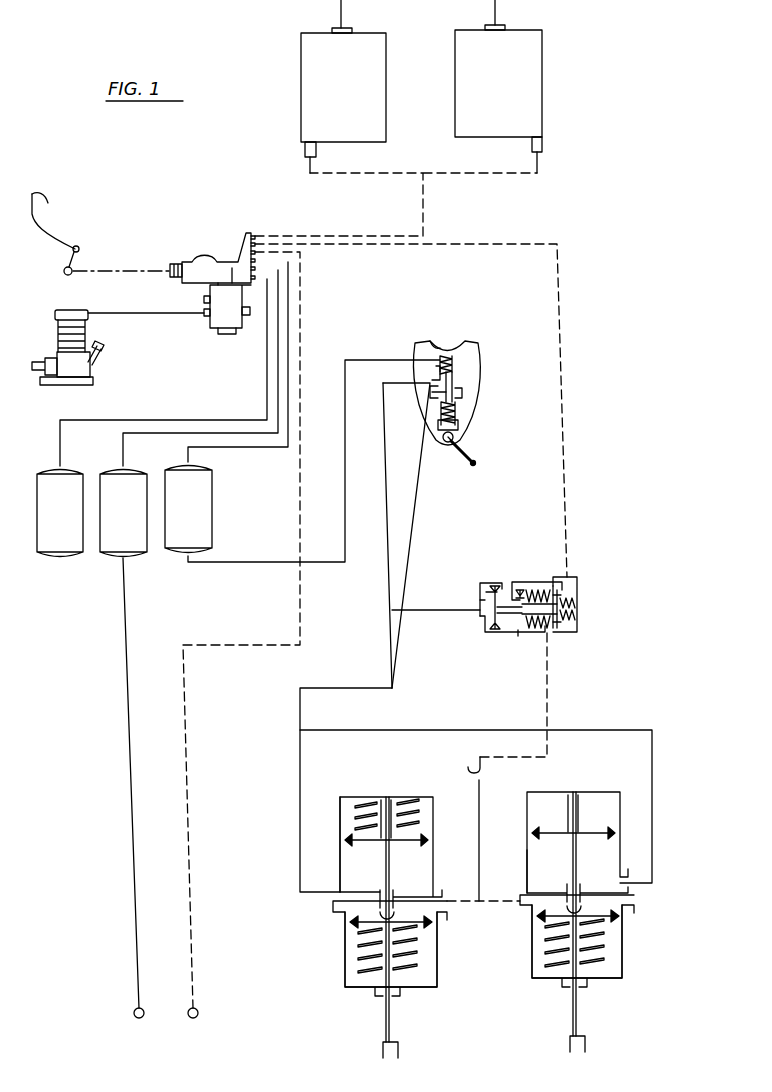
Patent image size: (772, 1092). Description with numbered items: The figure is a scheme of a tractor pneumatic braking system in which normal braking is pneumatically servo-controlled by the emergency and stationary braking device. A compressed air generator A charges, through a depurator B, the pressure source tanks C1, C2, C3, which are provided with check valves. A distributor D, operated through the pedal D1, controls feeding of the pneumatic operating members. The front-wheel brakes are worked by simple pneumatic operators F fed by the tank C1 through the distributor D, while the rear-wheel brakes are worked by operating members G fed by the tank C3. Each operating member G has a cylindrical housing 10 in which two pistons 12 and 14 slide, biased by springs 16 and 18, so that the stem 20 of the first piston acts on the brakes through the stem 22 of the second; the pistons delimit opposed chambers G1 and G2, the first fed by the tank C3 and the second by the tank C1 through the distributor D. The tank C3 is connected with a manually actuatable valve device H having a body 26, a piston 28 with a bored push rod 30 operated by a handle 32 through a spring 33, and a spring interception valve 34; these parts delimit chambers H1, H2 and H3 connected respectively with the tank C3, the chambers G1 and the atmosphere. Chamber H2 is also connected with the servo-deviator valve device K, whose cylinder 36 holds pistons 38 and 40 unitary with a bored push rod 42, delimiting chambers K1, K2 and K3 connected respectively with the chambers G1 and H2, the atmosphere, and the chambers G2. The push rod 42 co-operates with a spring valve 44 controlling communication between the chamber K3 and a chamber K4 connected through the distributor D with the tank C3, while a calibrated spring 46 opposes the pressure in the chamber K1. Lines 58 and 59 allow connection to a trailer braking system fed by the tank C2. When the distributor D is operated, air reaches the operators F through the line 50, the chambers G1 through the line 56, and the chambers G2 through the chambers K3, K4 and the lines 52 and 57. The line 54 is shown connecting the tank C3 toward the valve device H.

The cylindrical housing 10 is at (340, 821).
The first piston 12 is at (428, 840).
The second piston 14 is at (345, 928).
The spring 16 is at (415, 805).
The spring 18 is at (420, 942).
The stem 20 is at (568, 855).
The stem 22 is at (392, 1024).
The body 26 is at (455, 368).
The piston 28 is at (458, 410).
The bored push rod 30 is at (440, 395).
The handle 32 is at (460, 463).
The spring 33 is at (465, 444).
The spring interception valve 34 is at (430, 342).
The cylinder 36 is at (478, 636).
The piston 38 is at (494, 585).
The piston 40 is at (518, 588).
The bored push rod 42 is at (532, 634).
The spring valve 44 is at (562, 634).
The spring 46 is at (530, 588).
The line 50 is at (423, 212).
The line 52 is at (566, 354).
The conduit 54 is at (266, 563).
The line 56 is at (300, 785).
The line 57 is at (470, 770).
The line 58 is at (195, 828).
The line 59 is at (131, 818).
The compressed air generator A is at (80, 364).
The depurator B is at (220, 318).
The tank C1 is at (62, 543).
The tank C2 is at (137, 540).
The tank C3 is at (200, 524).
The distributor D is at (205, 262).
The pedal D1 is at (56, 235).
The pneumatic operator F is at (380, 70).
The operating member G is at (440, 972).
The chamber G1 is at (412, 868).
The chamber G2 is at (340, 917).
The valve device H is at (484, 373).
The chamber H1 is at (447, 350).
The chamber H2 is at (462, 398).
The chamber H3 is at (442, 428).
The valve device K is at (580, 588).
The chamber K1 is at (480, 590).
The chamber K2 is at (506, 634).
The chamber K3 is at (546, 590).
The chamber K4 is at (575, 634).